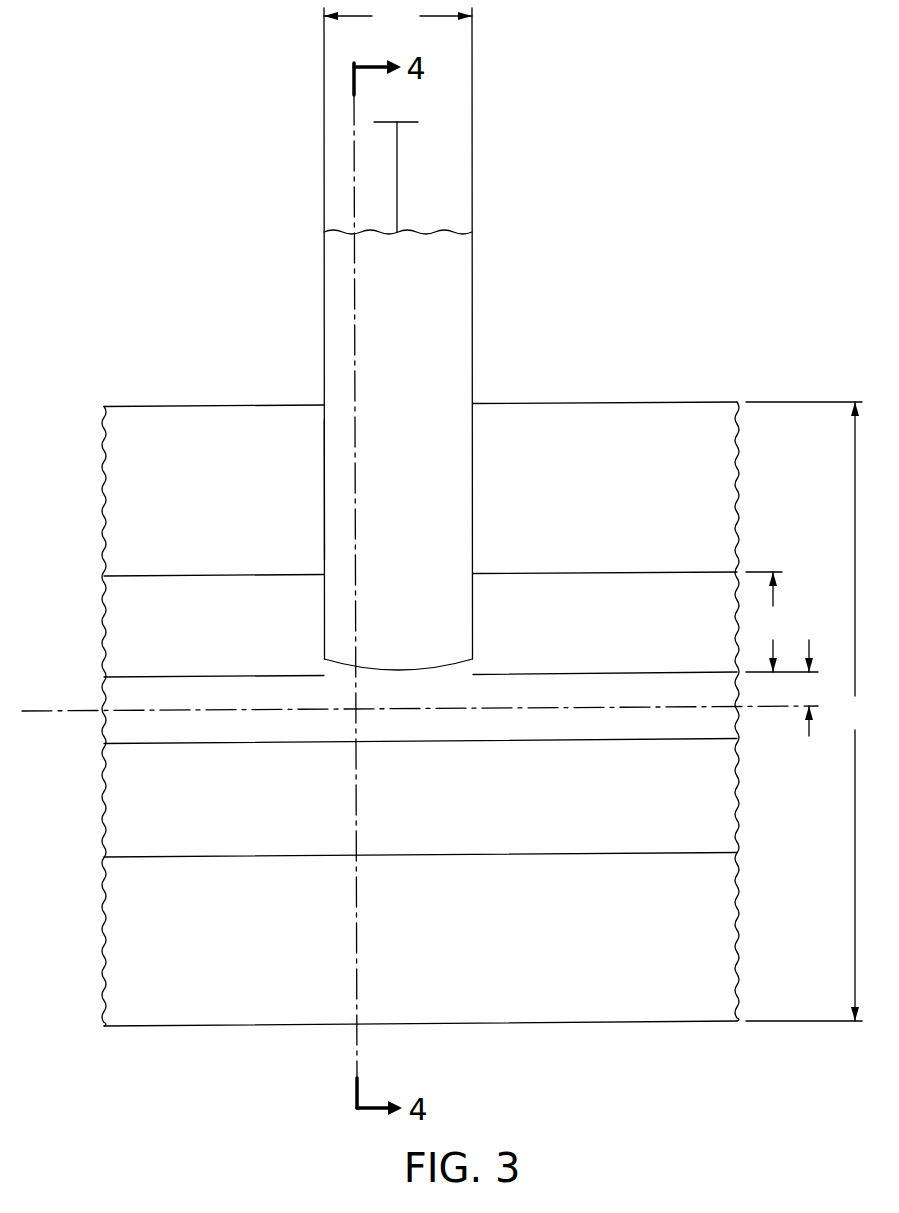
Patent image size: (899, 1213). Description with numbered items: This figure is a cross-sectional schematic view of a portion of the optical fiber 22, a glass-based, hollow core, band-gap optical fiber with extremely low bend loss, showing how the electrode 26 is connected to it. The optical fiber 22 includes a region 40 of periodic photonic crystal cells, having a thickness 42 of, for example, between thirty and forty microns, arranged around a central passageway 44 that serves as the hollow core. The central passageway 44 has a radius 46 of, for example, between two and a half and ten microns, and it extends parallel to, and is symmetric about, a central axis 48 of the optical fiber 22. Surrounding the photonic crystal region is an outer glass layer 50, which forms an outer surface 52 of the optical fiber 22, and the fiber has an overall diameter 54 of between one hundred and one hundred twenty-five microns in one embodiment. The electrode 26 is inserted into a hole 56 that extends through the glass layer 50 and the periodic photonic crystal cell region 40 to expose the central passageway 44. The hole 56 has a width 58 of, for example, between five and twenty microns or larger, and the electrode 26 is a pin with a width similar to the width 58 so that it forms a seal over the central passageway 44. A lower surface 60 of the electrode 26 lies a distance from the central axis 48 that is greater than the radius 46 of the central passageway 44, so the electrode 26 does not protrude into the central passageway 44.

The optical fiber 22 is at (172, 397).
The electrode 26 is at (324, 316).
The region of periodic photonic crystal cells 40 is at (120, 605).
The thickness 42 is at (782, 622).
The central passageway 44 is at (115, 688).
The radius 46 is at (808, 688).
The central axis 48 is at (45, 712).
The outer glass layer 50 is at (120, 497).
The outer surface 52 is at (541, 403).
The overall diameter 54 is at (809, 711).
The hole 56 is at (325, 490).
The width 58 is at (398, 16).
The lower surface 60 is at (437, 669).